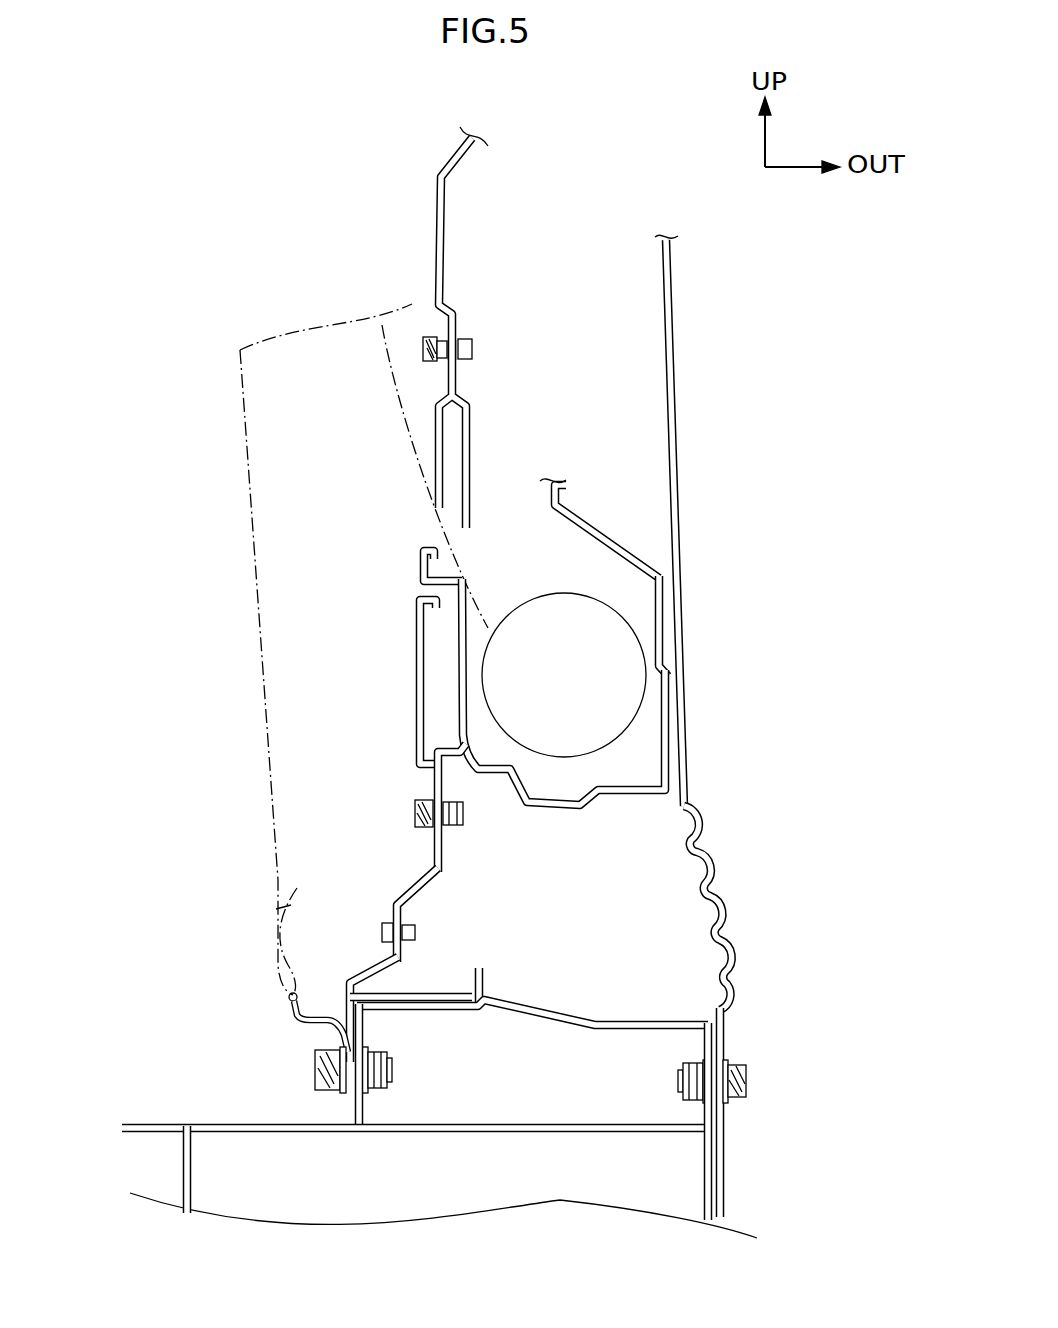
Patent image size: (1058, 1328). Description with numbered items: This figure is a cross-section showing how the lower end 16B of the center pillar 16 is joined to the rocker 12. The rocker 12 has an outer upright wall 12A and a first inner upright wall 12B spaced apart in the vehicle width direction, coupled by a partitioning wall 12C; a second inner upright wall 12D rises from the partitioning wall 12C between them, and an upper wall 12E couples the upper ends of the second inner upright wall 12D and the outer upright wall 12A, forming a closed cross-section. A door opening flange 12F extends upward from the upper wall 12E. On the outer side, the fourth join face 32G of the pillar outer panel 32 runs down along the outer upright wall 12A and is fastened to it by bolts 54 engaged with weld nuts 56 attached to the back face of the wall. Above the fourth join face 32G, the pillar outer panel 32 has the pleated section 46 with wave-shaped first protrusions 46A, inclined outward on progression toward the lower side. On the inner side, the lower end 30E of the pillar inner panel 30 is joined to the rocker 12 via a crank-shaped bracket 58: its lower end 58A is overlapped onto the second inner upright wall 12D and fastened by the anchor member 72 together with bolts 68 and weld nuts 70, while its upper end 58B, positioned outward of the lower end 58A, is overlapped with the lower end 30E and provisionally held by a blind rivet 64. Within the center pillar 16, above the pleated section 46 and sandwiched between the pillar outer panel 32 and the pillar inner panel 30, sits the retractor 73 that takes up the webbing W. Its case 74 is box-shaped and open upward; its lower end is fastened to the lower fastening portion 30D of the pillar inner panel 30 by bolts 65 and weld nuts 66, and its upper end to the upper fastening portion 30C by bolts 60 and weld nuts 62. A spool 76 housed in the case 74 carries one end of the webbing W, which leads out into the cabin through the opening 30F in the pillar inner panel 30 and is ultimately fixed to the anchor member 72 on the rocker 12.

The rocker 12 is at (460, 1082).
The outer upright wall 12A is at (726, 1190).
The first inner upright wall 12B is at (183, 1170).
The partitioning wall 12C is at (487, 1135).
The second inner upright wall 12D is at (360, 1108).
The upper wall 12E is at (637, 1032).
The door opening flange 12F is at (485, 980).
The center pillar 16 is at (770, 726).
The lower end of the center pillar 16B is at (770, 726).
The pillar inner panel 30 is at (487, 742).
The upper fastening portion 30C is at (435, 320).
The lower fastening portion 30D is at (432, 855).
The lower end of the pillar inner panel 30E is at (403, 915).
The opening 30F is at (424, 582).
The pillar outer panel 32 is at (672, 338).
The fourth join face 32G is at (726, 1132).
The pleated section 46 is at (784, 900).
The first protrusions 46A is at (710, 868).
The bolts 54 is at (748, 1082).
The weld nuts 56 is at (700, 1065).
The bracket 58 is at (387, 1026).
The lower end of the bracket 58A is at (395, 995).
The upper end of the bracket 58B is at (403, 953).
The bolts 60 is at (430, 358).
The weld nuts 62 is at (462, 340).
The blind rivet 64 is at (394, 925).
The bolts 65 is at (430, 803).
The weld nuts 66 is at (455, 826).
The bolts 68 is at (316, 1070).
The weld nuts 70 is at (392, 1064).
The anchor member 72 is at (284, 1005).
The retractor 73 is at (678, 577).
The case 74 is at (600, 533).
The spool 76 is at (710, 626).
The webbing W is at (252, 550).